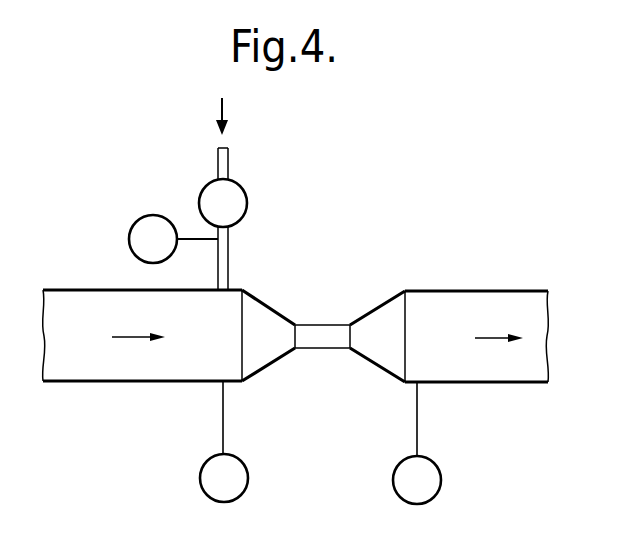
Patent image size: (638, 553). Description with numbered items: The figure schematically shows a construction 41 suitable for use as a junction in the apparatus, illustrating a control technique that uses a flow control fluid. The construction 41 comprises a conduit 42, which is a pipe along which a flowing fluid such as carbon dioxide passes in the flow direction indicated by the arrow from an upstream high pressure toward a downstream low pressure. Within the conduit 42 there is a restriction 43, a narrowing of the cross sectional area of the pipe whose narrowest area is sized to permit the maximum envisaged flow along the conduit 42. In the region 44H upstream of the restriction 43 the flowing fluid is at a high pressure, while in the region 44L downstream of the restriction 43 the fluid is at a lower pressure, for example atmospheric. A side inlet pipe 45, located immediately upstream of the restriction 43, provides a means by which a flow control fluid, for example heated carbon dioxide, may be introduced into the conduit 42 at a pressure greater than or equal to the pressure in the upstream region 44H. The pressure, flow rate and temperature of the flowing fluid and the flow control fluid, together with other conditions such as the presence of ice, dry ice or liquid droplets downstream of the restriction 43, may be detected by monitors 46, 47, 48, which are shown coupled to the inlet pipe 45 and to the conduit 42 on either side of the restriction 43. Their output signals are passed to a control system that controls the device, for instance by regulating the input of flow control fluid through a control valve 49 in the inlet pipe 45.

The construction 41 is at (296, 318).
The conduit 42 is at (90, 383).
The restriction 43 is at (322, 340).
The upstream region 44H is at (111, 337).
The downstream region 44L is at (475, 338).
The side inlet pipe 45 is at (226, 268).
The monitor 46 is at (135, 228).
The monitor 47 is at (200, 480).
The monitor 48 is at (440, 480).
The control valve 49 is at (207, 195).